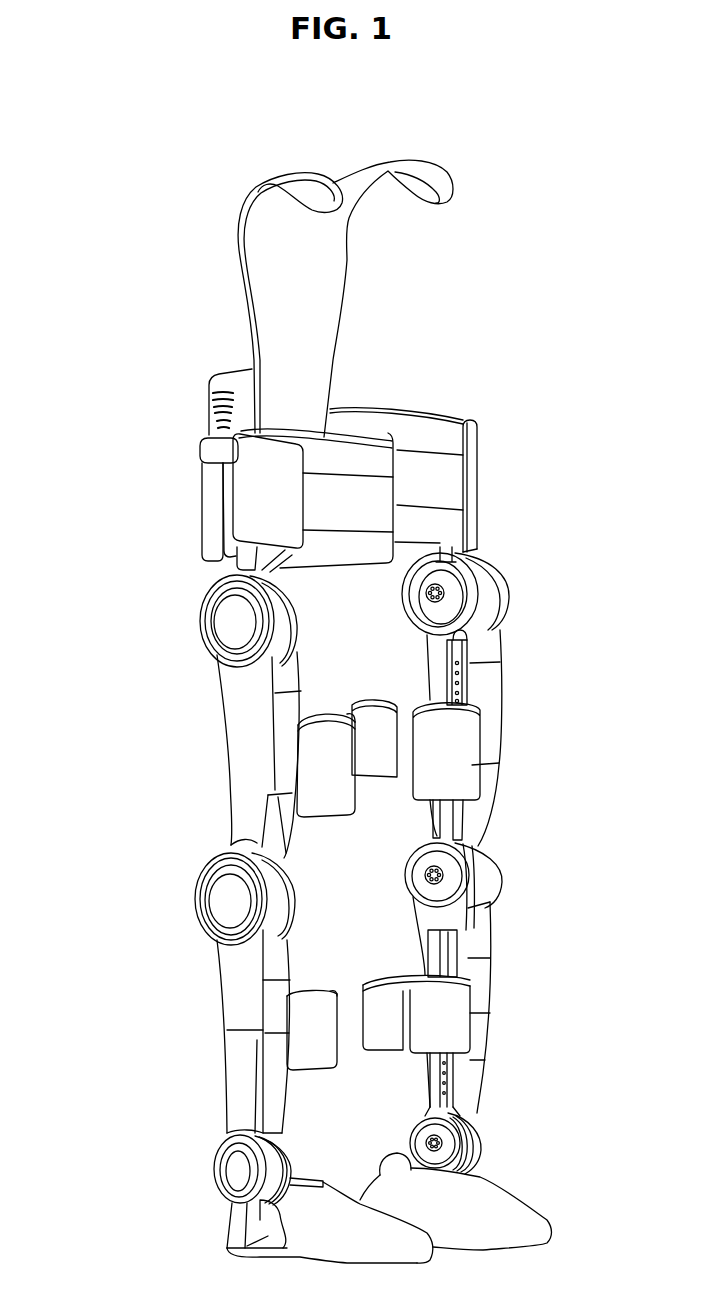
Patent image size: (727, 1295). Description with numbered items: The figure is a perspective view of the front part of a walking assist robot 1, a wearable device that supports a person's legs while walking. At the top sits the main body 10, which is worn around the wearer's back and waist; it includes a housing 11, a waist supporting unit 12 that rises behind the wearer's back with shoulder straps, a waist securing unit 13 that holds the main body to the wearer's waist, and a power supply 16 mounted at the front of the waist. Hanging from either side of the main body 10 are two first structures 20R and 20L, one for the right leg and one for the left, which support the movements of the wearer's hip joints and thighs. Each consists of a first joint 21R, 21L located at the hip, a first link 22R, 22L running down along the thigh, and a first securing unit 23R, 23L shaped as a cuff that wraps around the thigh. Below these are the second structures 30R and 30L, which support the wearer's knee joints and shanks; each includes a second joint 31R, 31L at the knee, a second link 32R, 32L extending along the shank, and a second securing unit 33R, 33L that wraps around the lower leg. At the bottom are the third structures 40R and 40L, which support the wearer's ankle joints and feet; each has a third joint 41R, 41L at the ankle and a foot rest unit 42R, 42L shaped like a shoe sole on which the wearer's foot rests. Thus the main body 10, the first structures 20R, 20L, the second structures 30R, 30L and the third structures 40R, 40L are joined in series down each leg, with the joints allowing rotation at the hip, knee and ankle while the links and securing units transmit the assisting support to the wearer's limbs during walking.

The walking assist robot 1 is at (600, 164).
The main body 10 is at (405, 366).
The housing 11 is at (243, 384).
The waist supporting unit 12 is at (318, 313).
The waist securing unit 13 is at (512, 486).
The power supply 16 is at (283, 498).
The first structure 20R is at (196, 716).
The first joint 21R is at (215, 620).
The first link 22R is at (243, 728).
The first securing unit 23R is at (327, 775).
The first structure 20L is at (519, 696).
The first joint 21L is at (509, 583).
The first link 22L is at (493, 680).
The first securing unit 23L is at (483, 750).
The second structure 30R is at (187, 993).
The second joint 31R is at (215, 902).
The second link 32R is at (240, 1003).
The second securing unit 33R is at (308, 1040).
The second structure 30L is at (526, 831).
The second joint 31L is at (500, 876).
The second link 32L is at (493, 973).
The second securing unit 33L is at (489, 1015).
The third structure 40R is at (235, 1202).
The third joint 41R is at (233, 1172).
The foot rest unit 42R is at (270, 1233).
The third structure 40L is at (526, 1181).
The third joint 41L is at (480, 1140).
The foot rest unit 42L is at (533, 1223).